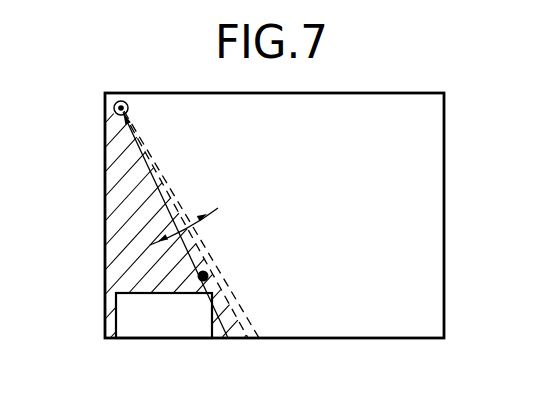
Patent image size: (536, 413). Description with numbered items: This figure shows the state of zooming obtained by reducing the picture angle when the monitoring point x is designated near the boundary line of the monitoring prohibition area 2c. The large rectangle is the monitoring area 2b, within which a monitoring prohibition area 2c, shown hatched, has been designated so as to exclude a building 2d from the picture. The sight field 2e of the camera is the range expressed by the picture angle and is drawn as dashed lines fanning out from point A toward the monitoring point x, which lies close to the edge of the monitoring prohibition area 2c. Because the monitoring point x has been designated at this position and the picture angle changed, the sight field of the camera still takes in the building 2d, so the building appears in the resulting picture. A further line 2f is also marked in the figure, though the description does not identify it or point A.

The monitoring area 2b is at (427, 292).
The monitoring prohibition area 2c is at (112, 203).
The building 2d is at (118, 307).
The field of sight of camera 2e is at (249, 339).
The light ray line 2f is at (226, 339).
The light source point A is at (113, 108).
The monitoring point x is at (209, 274).